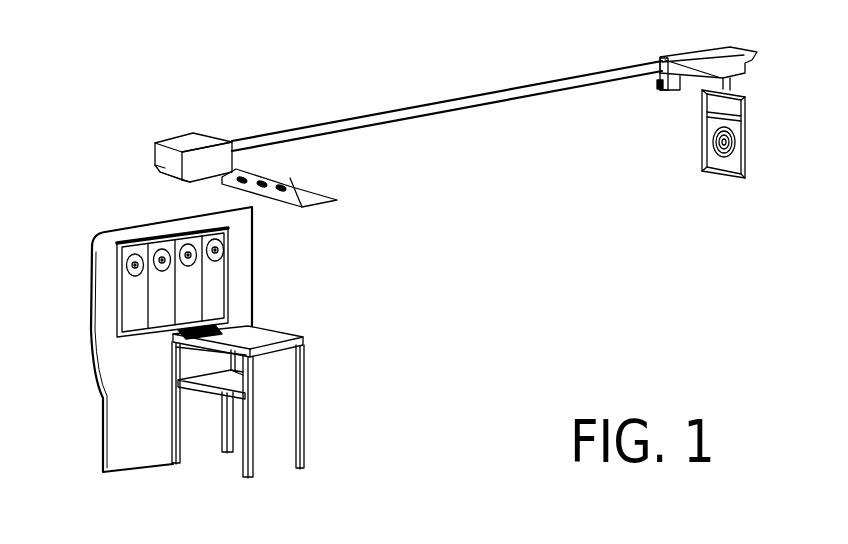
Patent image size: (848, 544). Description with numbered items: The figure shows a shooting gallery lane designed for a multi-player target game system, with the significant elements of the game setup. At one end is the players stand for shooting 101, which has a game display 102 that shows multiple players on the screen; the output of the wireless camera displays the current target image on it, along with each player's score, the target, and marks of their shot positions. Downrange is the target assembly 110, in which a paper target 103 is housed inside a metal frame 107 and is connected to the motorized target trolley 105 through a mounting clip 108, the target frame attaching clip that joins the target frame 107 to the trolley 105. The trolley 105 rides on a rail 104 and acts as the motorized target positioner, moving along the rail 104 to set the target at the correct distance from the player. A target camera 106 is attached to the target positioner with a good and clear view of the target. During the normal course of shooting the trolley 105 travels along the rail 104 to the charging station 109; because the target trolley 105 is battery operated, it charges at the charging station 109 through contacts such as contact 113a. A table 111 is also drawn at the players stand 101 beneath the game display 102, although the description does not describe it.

The players stand for shooting 101 is at (72, 230).
The game display 102 is at (158, 245).
The paper target 103 is at (735, 154).
The rail 104 is at (458, 96).
The motorized target trolley 105 is at (703, 50).
The target camera 106 is at (675, 88).
The metal frame 107 is at (720, 173).
The mounting clip 108 is at (733, 92).
The charging station 109 is at (189, 135).
The target assembly 110 is at (330, 214).
The table 111 is at (256, 326).
The contact 113a is at (653, 87).